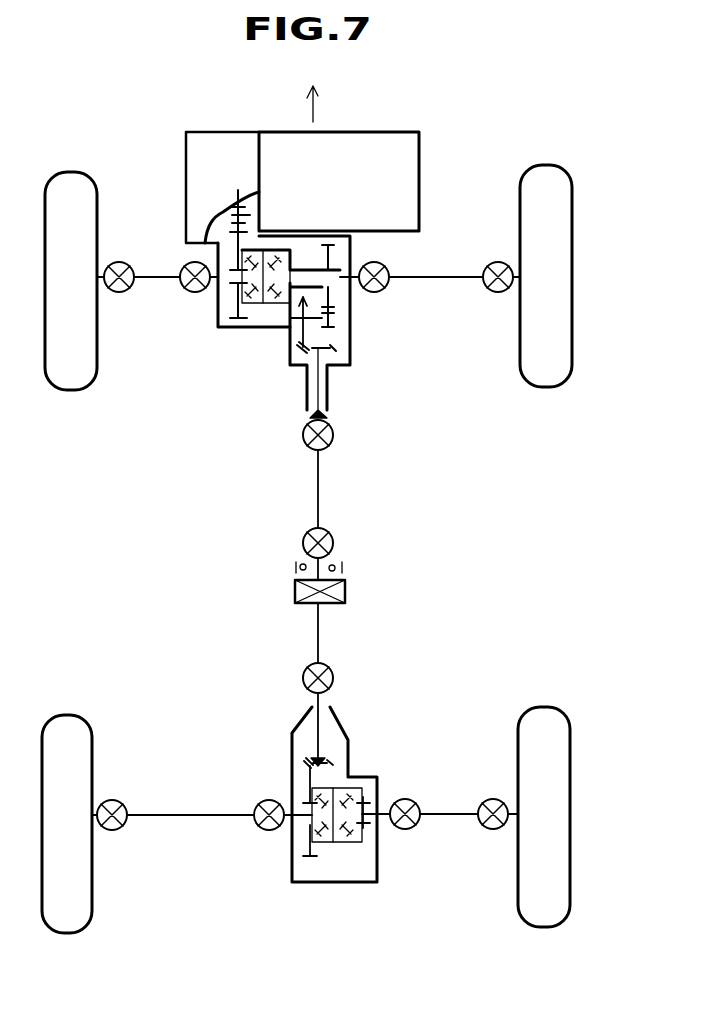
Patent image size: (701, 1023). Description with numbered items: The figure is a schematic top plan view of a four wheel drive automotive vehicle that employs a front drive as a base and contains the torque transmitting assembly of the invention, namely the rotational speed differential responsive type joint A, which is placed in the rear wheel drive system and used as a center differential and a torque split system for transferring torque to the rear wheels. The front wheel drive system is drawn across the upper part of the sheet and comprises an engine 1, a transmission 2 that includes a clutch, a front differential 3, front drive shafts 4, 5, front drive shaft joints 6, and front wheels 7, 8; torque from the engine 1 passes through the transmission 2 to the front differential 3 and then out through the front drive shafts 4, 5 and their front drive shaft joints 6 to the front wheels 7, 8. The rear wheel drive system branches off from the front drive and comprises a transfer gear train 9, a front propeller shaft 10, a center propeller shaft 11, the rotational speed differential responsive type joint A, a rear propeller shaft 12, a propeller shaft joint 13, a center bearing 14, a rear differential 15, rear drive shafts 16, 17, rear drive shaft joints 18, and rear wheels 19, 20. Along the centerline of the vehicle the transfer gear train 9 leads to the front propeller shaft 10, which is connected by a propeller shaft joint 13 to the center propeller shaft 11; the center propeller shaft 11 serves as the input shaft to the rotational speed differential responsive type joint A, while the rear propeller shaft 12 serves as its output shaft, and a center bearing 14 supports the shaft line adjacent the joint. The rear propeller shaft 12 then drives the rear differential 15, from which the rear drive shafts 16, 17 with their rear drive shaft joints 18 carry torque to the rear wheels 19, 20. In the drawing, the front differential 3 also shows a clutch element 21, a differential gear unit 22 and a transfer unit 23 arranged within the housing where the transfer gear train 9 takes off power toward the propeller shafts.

The engine 1 is at (393, 130).
The transmission 2 is at (215, 131).
The front differential 3 is at (252, 320).
The front drive shaft 4 is at (158, 280).
The front drive shaft 5 is at (460, 280).
The front drive shaft joints 6 is at (185, 264).
The front wheel 7 is at (68, 172).
The front wheel 8 is at (543, 165).
The transfer gear train 9 is at (350, 357).
The front propeller shaft 10 is at (320, 485).
The center propeller shaft 11 is at (330, 563).
The rear propeller shaft 12 is at (322, 632).
The propeller shaft joint 13 is at (302, 435).
The center bearing 14 is at (295, 568).
The rear differential 15 is at (330, 782).
The rear drive shaft 16 is at (192, 818).
The rear drive shaft 17 is at (452, 815).
The rear drive shaft joints 18 is at (258, 805).
The rear wheel 19 is at (68, 713).
The rear wheel 20 is at (542, 707).
The clutch 21 is at (223, 213).
The differential gear unit 22 is at (282, 303).
The transfer unit 23 is at (350, 333).
The rotational speed differential responsive type joint A is at (346, 591).